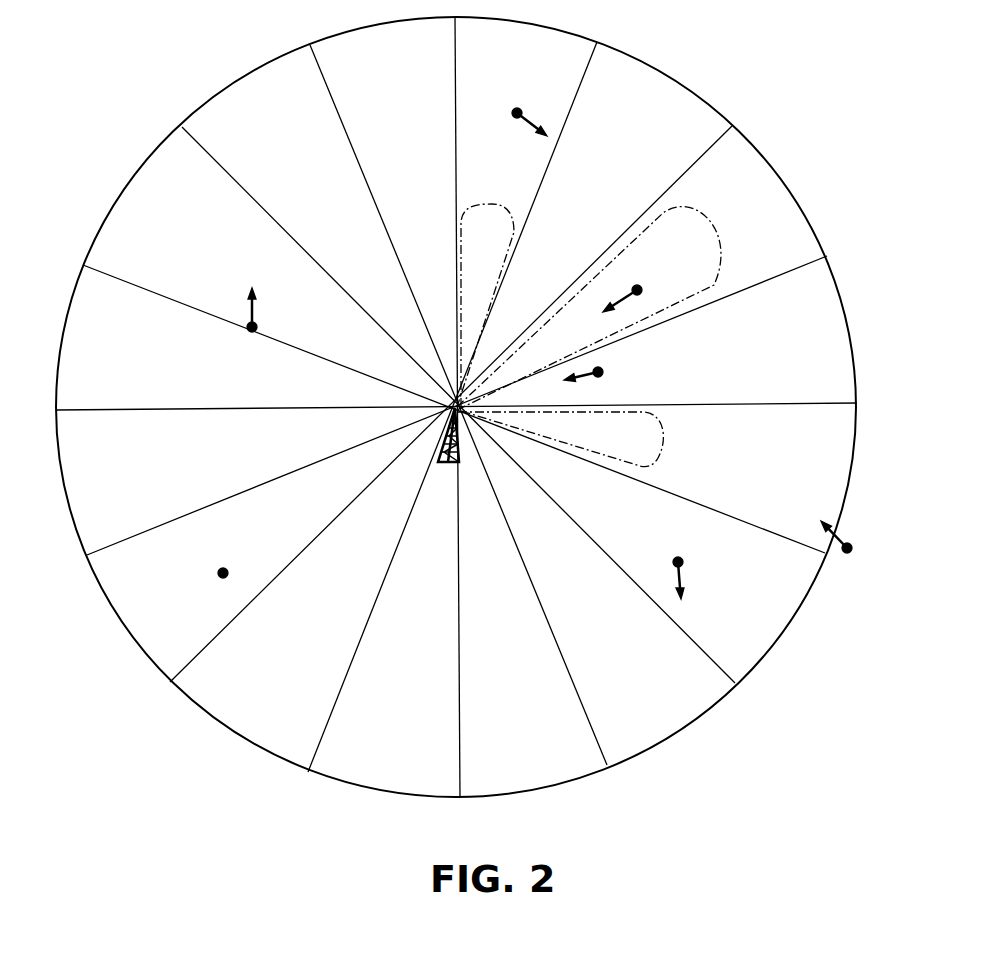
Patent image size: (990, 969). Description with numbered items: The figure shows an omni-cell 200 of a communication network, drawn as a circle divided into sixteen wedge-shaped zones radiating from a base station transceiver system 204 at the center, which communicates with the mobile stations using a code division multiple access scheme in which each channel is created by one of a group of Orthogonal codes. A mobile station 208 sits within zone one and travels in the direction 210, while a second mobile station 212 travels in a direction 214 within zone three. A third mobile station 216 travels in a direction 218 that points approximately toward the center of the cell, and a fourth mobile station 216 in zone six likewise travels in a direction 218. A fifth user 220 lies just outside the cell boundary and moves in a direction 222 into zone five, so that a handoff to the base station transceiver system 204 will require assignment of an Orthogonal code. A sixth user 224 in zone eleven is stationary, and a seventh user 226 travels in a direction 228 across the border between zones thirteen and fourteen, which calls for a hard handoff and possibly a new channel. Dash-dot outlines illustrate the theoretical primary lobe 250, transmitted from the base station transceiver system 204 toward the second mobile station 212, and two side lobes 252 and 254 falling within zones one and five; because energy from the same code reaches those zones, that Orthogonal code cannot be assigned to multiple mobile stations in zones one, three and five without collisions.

The cell 200 is at (886, 170).
The base station transceiver system 204 is at (449, 468).
The mobile station 208 is at (516, 102).
The direction 210 is at (527, 118).
The second mobile station 212 is at (652, 287).
The direction 214 is at (620, 300).
The third mobile station 216 is at (611, 374).
The direction 218 is at (592, 381).
The fifth user 220 is at (863, 555).
The direction 222 is at (839, 537).
The sixth user 224 is at (226, 558).
The seventh user 226 is at (244, 338).
The direction 228 is at (249, 318).
The primary lobe 250 is at (688, 224).
The side lobe 252 is at (466, 212).
The side lobe 254 is at (662, 453).